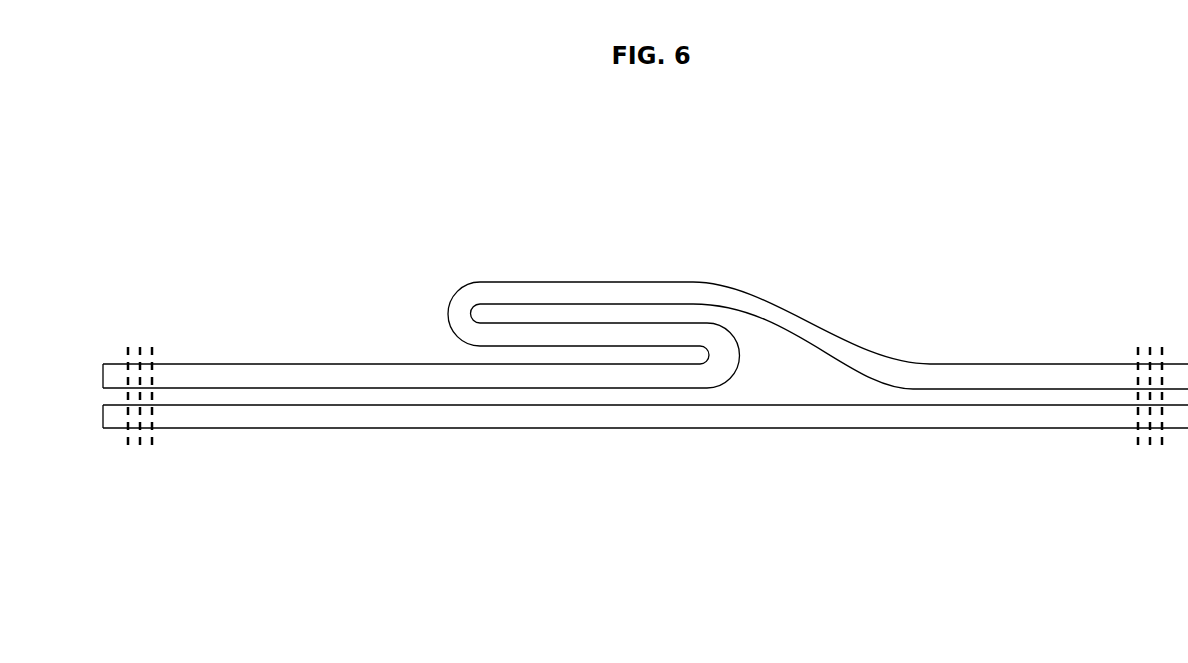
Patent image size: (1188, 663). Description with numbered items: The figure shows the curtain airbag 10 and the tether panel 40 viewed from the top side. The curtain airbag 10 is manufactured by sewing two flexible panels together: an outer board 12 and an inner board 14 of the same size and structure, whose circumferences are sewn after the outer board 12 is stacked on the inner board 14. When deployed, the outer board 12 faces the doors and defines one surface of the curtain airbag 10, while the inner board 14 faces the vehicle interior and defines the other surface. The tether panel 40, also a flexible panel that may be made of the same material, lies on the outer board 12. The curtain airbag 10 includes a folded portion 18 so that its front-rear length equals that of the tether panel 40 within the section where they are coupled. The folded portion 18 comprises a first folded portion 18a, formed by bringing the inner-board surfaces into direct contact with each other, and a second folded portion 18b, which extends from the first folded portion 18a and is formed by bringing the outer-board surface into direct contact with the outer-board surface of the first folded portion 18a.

The curtain airbag 10 is at (645, 280).
The outer board 12 is at (272, 388).
The inner board 14 is at (317, 364).
The folded portion 18 is at (689, 280).
The first folded portion 18a is at (742, 342).
The second folded portion 18b is at (663, 263).
The tether panel 40 is at (415, 418).